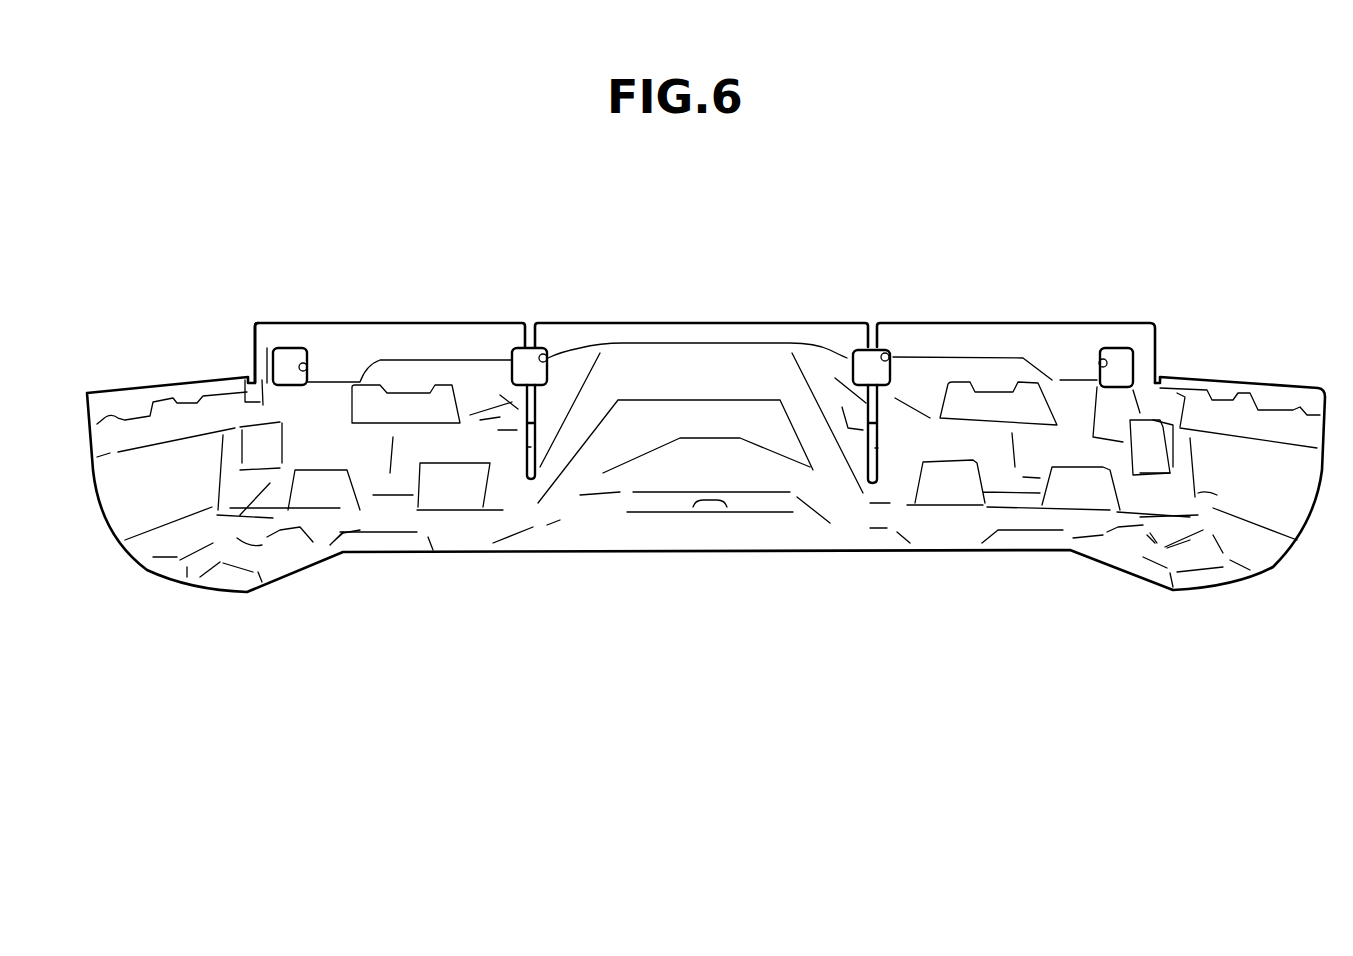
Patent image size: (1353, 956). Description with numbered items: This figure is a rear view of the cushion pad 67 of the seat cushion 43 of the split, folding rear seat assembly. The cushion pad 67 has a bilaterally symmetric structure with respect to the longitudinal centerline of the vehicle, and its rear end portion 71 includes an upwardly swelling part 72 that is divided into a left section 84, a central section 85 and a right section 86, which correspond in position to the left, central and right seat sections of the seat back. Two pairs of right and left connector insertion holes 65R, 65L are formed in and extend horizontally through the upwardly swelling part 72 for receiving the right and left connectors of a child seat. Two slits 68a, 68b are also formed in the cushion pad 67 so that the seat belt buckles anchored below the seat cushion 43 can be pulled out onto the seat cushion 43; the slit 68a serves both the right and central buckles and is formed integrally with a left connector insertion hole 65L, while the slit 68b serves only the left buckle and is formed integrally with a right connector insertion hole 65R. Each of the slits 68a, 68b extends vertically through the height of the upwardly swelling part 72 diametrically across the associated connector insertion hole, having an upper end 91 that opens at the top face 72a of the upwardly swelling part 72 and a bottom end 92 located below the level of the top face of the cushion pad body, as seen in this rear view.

The seat cushion 43 is at (226, 294).
The cushion pad 67 is at (174, 364).
The left connector insertion hole 65L is at (305, 366).
The right connector insertion hole 65R is at (548, 358).
The left section 84 is at (358, 338).
The central section 85 is at (693, 353).
The right section 86 is at (995, 345).
The upwardly swelling part 72 is at (403, 322).
The top face of the upwardly swelling part 72a is at (635, 320).
The slit 68a is at (858, 391).
The slit 68b is at (510, 397).
The upper end 91 is at (528, 320).
The bottom end 92 is at (528, 447).
The rear end portion 71 is at (653, 420).